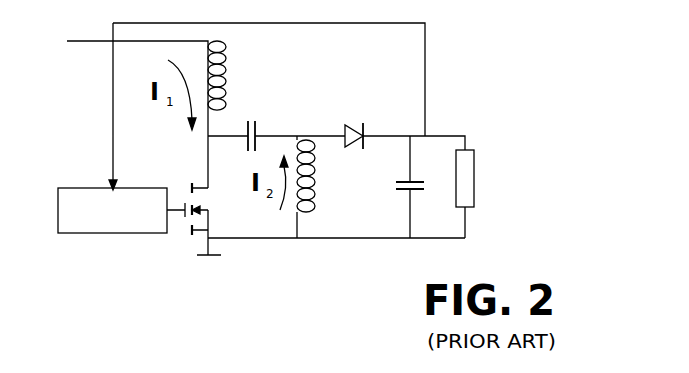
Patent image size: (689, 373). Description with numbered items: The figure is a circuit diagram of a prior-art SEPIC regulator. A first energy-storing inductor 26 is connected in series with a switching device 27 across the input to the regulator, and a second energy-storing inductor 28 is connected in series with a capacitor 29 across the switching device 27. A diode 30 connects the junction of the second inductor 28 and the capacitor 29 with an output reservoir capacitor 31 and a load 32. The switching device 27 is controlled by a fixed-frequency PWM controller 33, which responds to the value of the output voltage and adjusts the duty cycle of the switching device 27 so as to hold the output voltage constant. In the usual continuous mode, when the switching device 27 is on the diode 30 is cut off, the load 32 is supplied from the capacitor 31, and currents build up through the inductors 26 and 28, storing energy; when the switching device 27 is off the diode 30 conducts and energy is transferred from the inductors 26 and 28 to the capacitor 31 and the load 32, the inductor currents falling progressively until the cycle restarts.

The first energy-storing inductor 26 is at (227, 80).
The switching device 27 is at (186, 203).
The second energy-storing inductor 28 is at (314, 181).
The capacitor 29 is at (256, 128).
The diode 30 is at (351, 124).
The output reservoir capacitor 31 is at (396, 186).
The load 32 is at (476, 168).
The PWM controller 33 is at (120, 236).